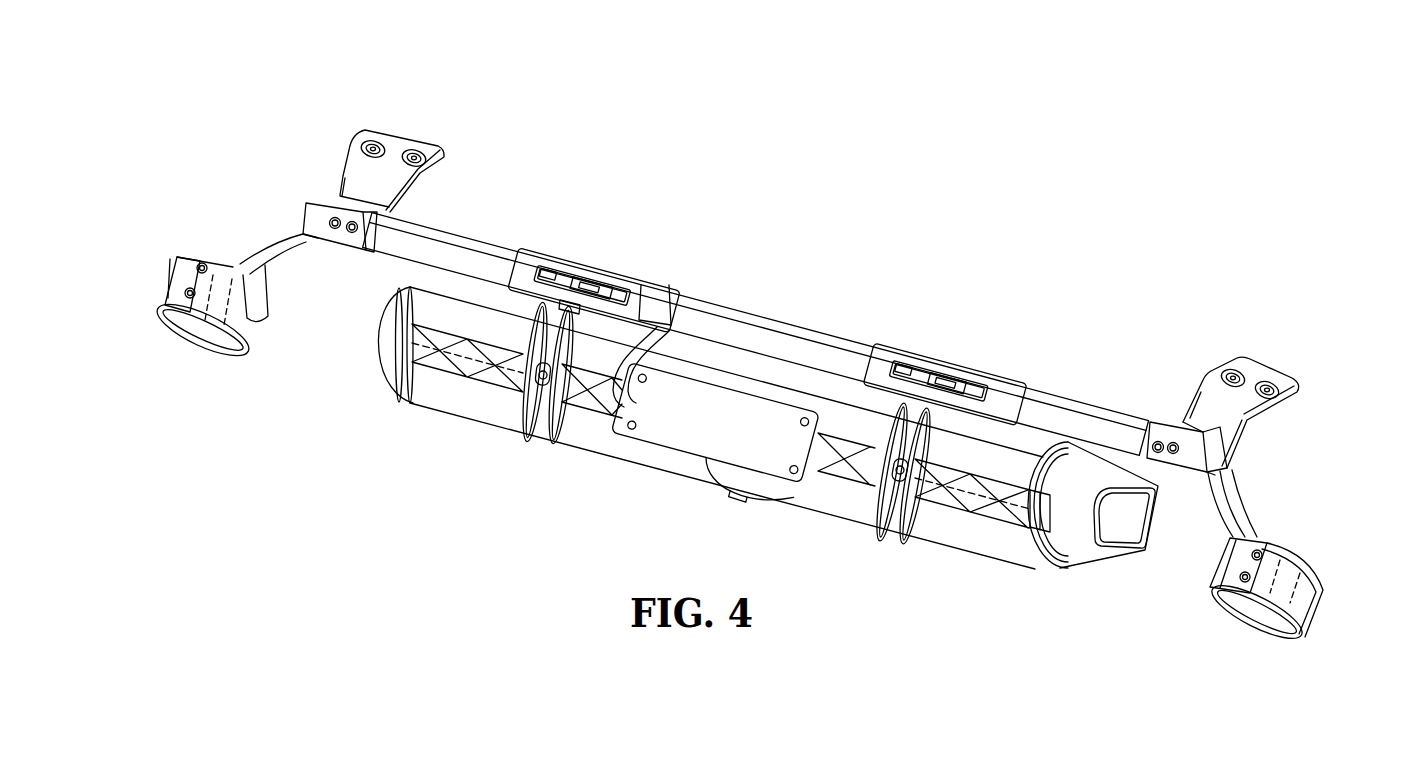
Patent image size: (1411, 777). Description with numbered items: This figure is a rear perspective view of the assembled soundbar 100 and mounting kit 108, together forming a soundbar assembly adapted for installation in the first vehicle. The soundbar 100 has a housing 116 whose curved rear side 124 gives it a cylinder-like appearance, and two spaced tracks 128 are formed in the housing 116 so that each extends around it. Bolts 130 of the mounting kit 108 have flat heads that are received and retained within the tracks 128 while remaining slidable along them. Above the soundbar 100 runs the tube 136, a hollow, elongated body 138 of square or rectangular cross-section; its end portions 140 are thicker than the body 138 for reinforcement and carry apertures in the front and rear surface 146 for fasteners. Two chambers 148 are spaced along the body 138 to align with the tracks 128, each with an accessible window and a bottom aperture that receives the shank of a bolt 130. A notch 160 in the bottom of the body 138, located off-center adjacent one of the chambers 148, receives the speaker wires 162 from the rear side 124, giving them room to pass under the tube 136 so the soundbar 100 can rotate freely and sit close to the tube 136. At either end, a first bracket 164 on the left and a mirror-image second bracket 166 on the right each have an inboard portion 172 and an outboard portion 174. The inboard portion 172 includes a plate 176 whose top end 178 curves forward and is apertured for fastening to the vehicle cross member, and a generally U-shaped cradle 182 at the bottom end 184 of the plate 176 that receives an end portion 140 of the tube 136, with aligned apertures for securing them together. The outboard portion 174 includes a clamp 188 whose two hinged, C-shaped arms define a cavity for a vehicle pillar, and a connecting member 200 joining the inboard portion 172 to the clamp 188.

The soundbar 100 is at (410, 432).
The mounting kit 108 is at (358, 94).
The housing 116 is at (1011, 572).
The rear side 124 is at (480, 413).
The track 128 is at (537, 412).
The bolt 130 is at (593, 287).
The tube 136 is at (795, 312).
The body 138 is at (453, 250).
The end portion 140 is at (347, 195).
The rear surface 146 is at (827, 350).
The chamber 148 is at (601, 252).
The notch 160 is at (672, 320).
The speaker wires 162 is at (588, 408).
The first bracket 164 is at (1287, 489).
The second bracket 166 is at (219, 228).
The inboard portion 172 is at (410, 113).
The outboard portion 174 is at (175, 355).
The plate 176 is at (372, 167).
The top end 178 is at (432, 138).
The cradle 182 is at (298, 217).
The bottom end 184 is at (340, 252).
The clamp 188 is at (146, 294).
The connecting member 200 is at (277, 333).